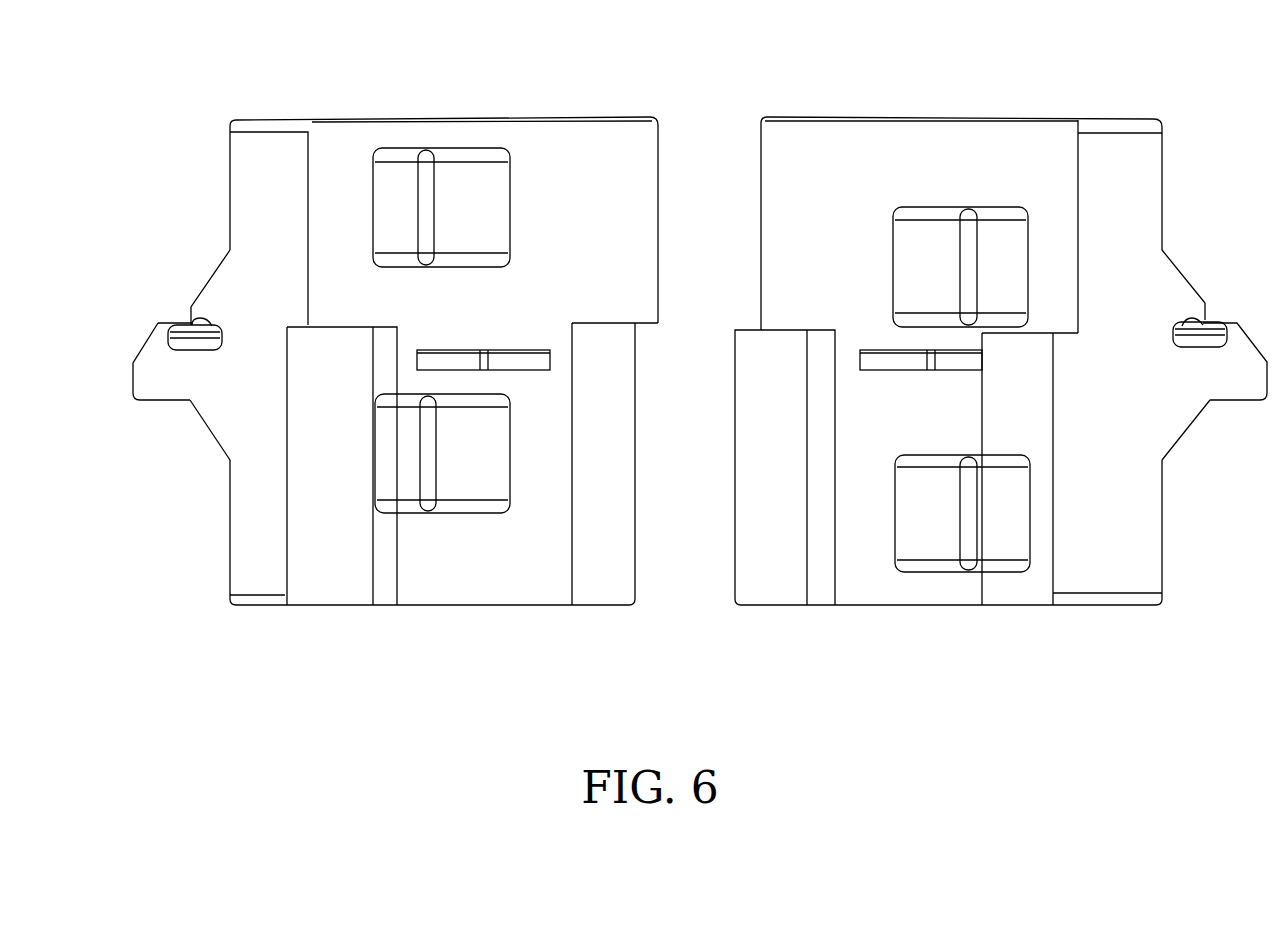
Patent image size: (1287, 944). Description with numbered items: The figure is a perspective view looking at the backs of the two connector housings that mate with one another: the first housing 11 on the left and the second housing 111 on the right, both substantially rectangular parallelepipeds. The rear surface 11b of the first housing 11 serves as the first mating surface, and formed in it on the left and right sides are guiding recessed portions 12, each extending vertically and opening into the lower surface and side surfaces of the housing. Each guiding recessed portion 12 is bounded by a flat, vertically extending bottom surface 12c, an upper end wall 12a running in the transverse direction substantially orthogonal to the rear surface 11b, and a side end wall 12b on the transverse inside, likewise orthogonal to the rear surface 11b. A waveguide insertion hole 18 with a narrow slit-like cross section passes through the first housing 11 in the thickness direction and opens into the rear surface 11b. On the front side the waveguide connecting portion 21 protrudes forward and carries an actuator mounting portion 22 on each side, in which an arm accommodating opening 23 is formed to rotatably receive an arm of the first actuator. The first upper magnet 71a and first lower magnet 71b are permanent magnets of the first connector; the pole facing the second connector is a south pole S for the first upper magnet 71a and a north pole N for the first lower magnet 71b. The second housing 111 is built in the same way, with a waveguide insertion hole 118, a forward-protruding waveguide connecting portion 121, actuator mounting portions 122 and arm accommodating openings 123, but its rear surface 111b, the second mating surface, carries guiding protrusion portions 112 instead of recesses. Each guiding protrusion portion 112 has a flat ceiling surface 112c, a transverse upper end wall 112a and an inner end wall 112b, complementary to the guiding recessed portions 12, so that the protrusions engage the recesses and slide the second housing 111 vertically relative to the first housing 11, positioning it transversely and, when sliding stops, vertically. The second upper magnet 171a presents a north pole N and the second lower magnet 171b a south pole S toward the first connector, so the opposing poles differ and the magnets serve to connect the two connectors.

The first housing 11 is at (268, 120).
The rear surface 11b is at (603, 123).
The guiding recessed portion 12 is at (332, 583).
The upper end wall 12a is at (343, 333).
The side end wall 12b is at (385, 593).
The bottom surface 12c is at (300, 552).
The waveguide insertion hole 18 is at (538, 363).
The waveguide connecting portion 21 is at (204, 427).
The actuator mounting portion 22 is at (210, 302).
The arm accommodating opening 23 is at (185, 340).
The first upper magnet 71a is at (460, 177).
The first lower magnet 71b is at (478, 493).
The north pole N is at (450, 493).
The south pole S is at (487, 208).
The second housing 111 is at (1135, 115).
The rear surface 111b is at (802, 123).
The guiding protrusion portion 112 is at (772, 590).
The upper end wall 112a is at (777, 327).
The inner end wall 112b is at (822, 592).
The ceiling surface 112c is at (1043, 435).
The waveguide insertion hole 118 is at (965, 355).
The waveguide connecting portion 121 is at (1193, 427).
The actuator mounting portion 122 is at (1188, 303).
The arm accommodating opening 123 is at (1210, 345).
The second upper magnet 171a is at (1000, 227).
The second lower magnet 171b is at (945, 550).